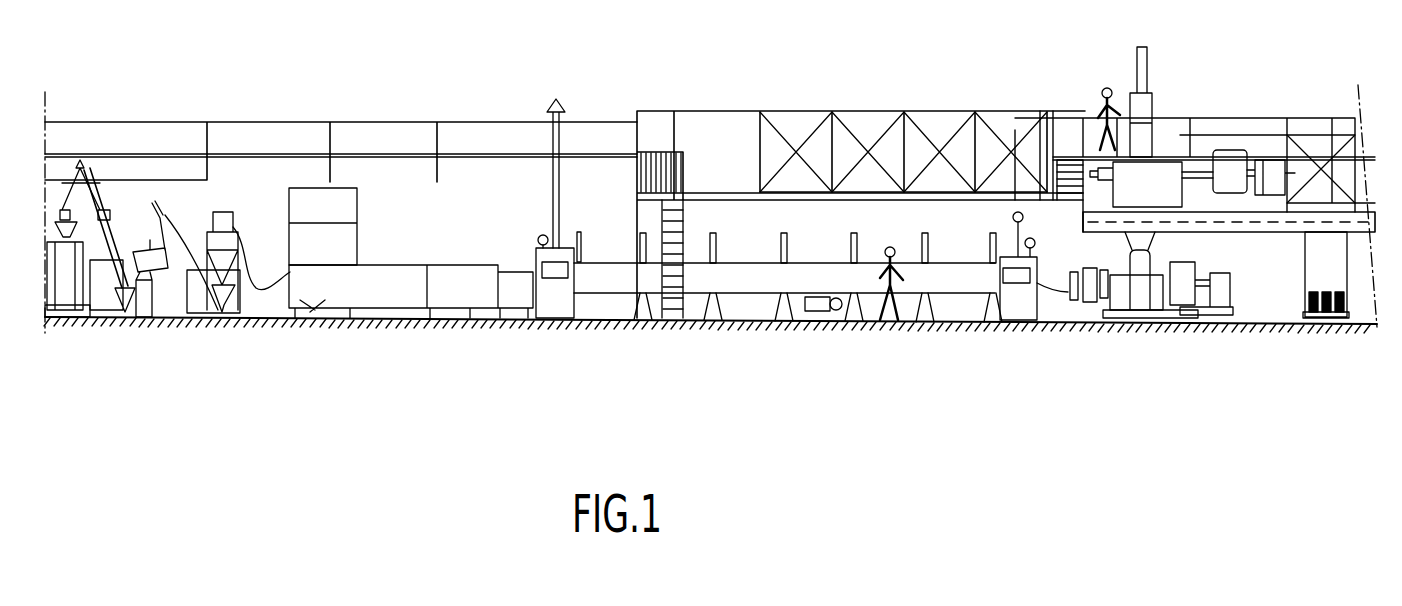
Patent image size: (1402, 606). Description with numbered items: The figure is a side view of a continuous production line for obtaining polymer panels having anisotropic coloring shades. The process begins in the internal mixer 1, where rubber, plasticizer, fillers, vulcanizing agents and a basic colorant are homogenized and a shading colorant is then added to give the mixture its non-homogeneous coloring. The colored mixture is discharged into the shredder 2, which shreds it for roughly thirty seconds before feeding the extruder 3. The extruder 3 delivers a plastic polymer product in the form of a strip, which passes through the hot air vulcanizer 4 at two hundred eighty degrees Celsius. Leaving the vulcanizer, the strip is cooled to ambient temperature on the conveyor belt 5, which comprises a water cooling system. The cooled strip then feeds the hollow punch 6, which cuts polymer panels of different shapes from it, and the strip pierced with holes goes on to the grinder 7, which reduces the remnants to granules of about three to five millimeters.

The internal mixer 1 is at (1150, 192).
The shredder 2 is at (1163, 323).
The extruder 3 is at (1122, 292).
The hot air vulcanizer 4 is at (753, 280).
The conveyor belt 5 is at (393, 293).
The hollow punch 6 is at (338, 240).
The grinder 7 is at (235, 235).